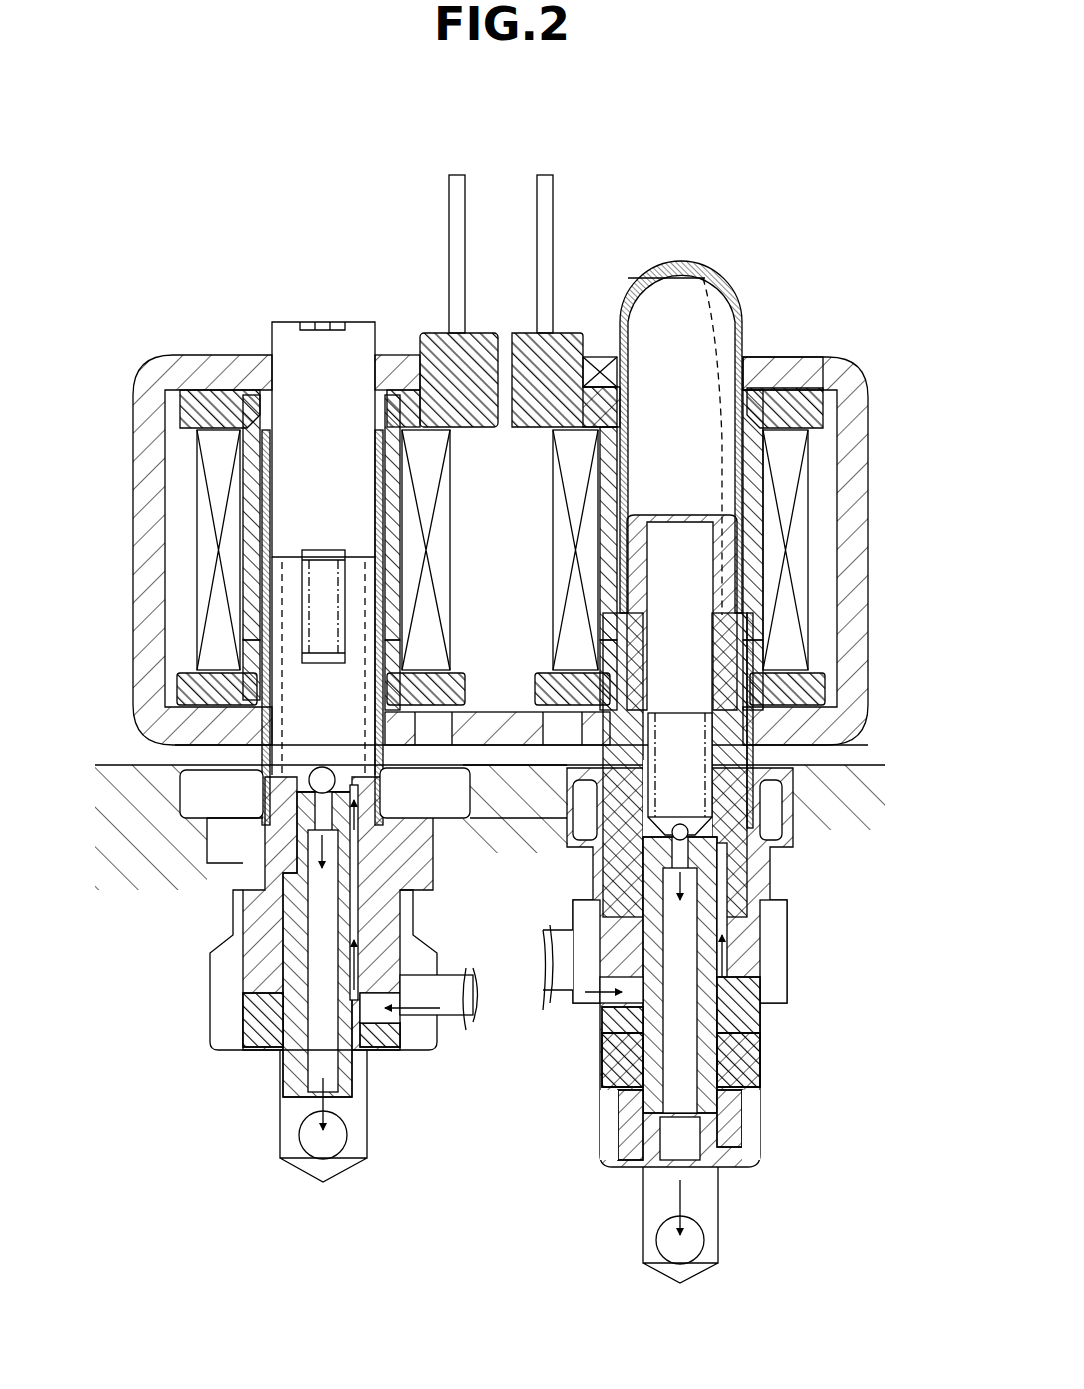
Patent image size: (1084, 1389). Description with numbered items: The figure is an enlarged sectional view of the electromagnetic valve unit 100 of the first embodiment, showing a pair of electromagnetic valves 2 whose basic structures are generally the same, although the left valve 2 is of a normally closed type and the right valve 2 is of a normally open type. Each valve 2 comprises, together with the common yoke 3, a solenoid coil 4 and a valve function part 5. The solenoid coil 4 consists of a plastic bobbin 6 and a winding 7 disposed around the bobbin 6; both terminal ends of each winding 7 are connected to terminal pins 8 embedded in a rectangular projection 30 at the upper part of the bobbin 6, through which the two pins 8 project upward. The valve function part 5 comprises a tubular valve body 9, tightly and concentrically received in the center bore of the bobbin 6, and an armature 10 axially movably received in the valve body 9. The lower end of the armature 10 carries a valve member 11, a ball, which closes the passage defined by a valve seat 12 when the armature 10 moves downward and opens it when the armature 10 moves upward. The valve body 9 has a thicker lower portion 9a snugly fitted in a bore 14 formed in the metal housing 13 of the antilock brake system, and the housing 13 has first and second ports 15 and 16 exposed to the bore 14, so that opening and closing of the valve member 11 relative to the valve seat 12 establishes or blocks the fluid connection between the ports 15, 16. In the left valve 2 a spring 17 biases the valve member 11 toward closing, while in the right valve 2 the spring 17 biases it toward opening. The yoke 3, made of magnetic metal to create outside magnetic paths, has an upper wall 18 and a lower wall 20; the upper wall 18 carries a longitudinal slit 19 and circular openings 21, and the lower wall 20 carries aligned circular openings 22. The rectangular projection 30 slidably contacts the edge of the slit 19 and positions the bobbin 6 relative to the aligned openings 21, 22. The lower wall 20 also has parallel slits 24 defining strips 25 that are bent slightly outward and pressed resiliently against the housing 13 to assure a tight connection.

The solenoid valve assembly 100 is at (742, 128).
The electromagnetic valve 2 is at (232, 382).
The yoke 3 is at (135, 520).
The solenoid coil 4 is at (192, 452).
The valve function part 5 is at (245, 630).
The bobbin 6 is at (190, 410).
The winding 7 is at (210, 490).
The terminal pin 8 is at (449, 205).
The tubular valve body 9 is at (290, 792).
The thicker lower portion 9a is at (265, 882).
The armature 10 is at (700, 292).
The valve member 11 is at (308, 773).
The valve seat 12 is at (300, 812).
The housing 13 is at (812, 765).
The bore 14 is at (285, 1112).
The first port 15 is at (445, 1015).
The second port 16 is at (305, 1140).
The spring 17 is at (310, 655).
The upper wall 18 is at (800, 357).
The slit 19 is at (598, 358).
The lower wall 20 is at (295, 742).
The circular opening 21 is at (372, 362).
The circular opening 22 is at (392, 660).
The parallel slit 24 is at (445, 715).
The strip 25 is at (490, 790).
The rectangular projection 30 is at (440, 333).